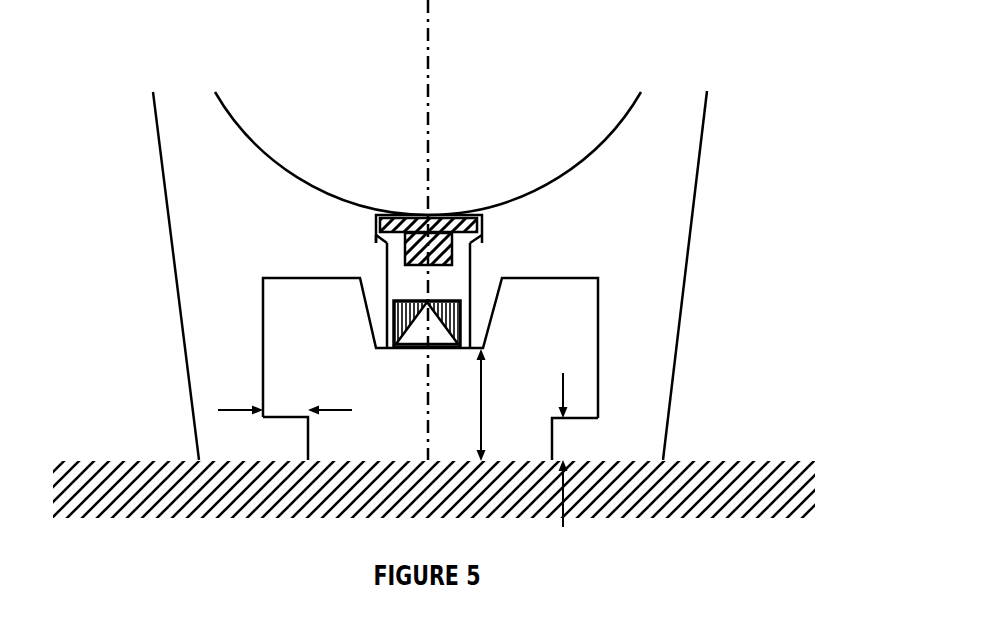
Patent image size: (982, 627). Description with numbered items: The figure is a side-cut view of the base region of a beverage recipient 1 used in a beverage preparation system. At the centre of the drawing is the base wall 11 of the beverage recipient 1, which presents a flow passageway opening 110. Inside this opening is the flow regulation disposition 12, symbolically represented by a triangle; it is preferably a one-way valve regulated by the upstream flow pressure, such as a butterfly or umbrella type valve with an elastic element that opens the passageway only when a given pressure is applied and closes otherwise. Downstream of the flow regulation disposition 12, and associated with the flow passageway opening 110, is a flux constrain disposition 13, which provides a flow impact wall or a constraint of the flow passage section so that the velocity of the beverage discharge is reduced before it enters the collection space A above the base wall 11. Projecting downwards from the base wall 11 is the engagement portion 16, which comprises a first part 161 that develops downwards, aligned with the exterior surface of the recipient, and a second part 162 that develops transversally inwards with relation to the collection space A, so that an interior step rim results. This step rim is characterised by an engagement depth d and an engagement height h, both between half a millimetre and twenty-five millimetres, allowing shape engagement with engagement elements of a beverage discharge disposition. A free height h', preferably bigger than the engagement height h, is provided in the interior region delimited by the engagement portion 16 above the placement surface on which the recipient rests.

The beverage recipient 1 is at (412, 233).
The collection space A is at (428, 133).
The base wall 11 is at (390, 239).
The flow passageway opening 110 is at (457, 294).
The flow regulation disposition 12 is at (430, 311).
The flux constrain disposition 13 is at (426, 211).
The engagement portion 16 is at (416, 275).
The first part 161 is at (395, 348).
The second part 162 is at (425, 438).
The engagement depth d is at (285, 404).
The engagement height h is at (551, 450).
The free height h' is at (463, 405).